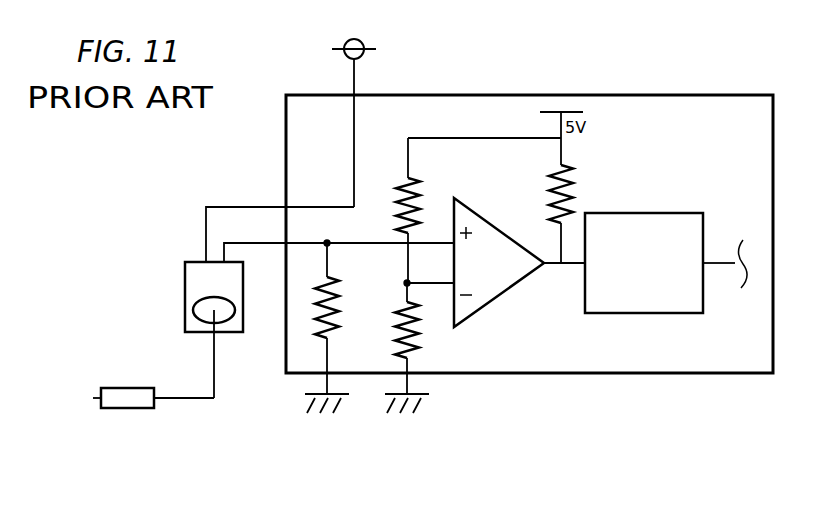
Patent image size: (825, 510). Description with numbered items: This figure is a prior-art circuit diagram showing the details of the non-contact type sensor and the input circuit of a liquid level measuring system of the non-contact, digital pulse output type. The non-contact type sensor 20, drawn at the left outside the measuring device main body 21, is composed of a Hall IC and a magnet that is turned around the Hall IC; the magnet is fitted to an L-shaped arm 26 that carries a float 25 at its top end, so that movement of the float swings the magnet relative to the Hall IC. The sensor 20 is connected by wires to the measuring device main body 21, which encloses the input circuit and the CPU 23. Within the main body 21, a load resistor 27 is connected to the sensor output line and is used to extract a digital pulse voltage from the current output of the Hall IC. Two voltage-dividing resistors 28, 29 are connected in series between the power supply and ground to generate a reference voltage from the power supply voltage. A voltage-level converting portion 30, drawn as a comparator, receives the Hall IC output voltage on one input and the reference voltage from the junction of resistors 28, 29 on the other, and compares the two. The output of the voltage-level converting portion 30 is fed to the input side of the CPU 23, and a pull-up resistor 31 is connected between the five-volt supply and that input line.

The non-contact type sensor 20 is at (185, 300).
The measuring device main body 21 is at (698, 94).
The CPU 23 is at (648, 212).
The float 25 is at (128, 387).
The L-shaped arm 26 is at (188, 399).
The load resistor 27 is at (318, 322).
The voltage-dividing resistor 28 is at (418, 192).
The voltage-dividing resistor 29 is at (417, 331).
The voltage-level converting portion 30 is at (500, 300).
The pull-up resistor 31 is at (572, 180).